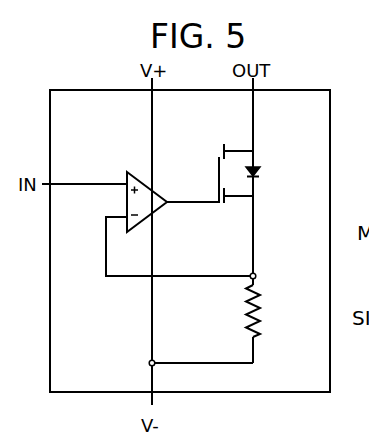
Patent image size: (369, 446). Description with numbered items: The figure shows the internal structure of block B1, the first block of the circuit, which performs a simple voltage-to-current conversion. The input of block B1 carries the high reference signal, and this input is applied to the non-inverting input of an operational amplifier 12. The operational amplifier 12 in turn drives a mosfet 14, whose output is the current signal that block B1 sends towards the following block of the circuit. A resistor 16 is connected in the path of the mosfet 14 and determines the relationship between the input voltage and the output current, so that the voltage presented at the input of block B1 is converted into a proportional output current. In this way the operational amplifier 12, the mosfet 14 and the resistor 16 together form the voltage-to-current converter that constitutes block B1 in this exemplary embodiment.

The operational amplifier 12 is at (158, 196).
The mosfet 14 is at (266, 156).
The resistor 16 is at (258, 312).
The block B1 is at (331, 91).